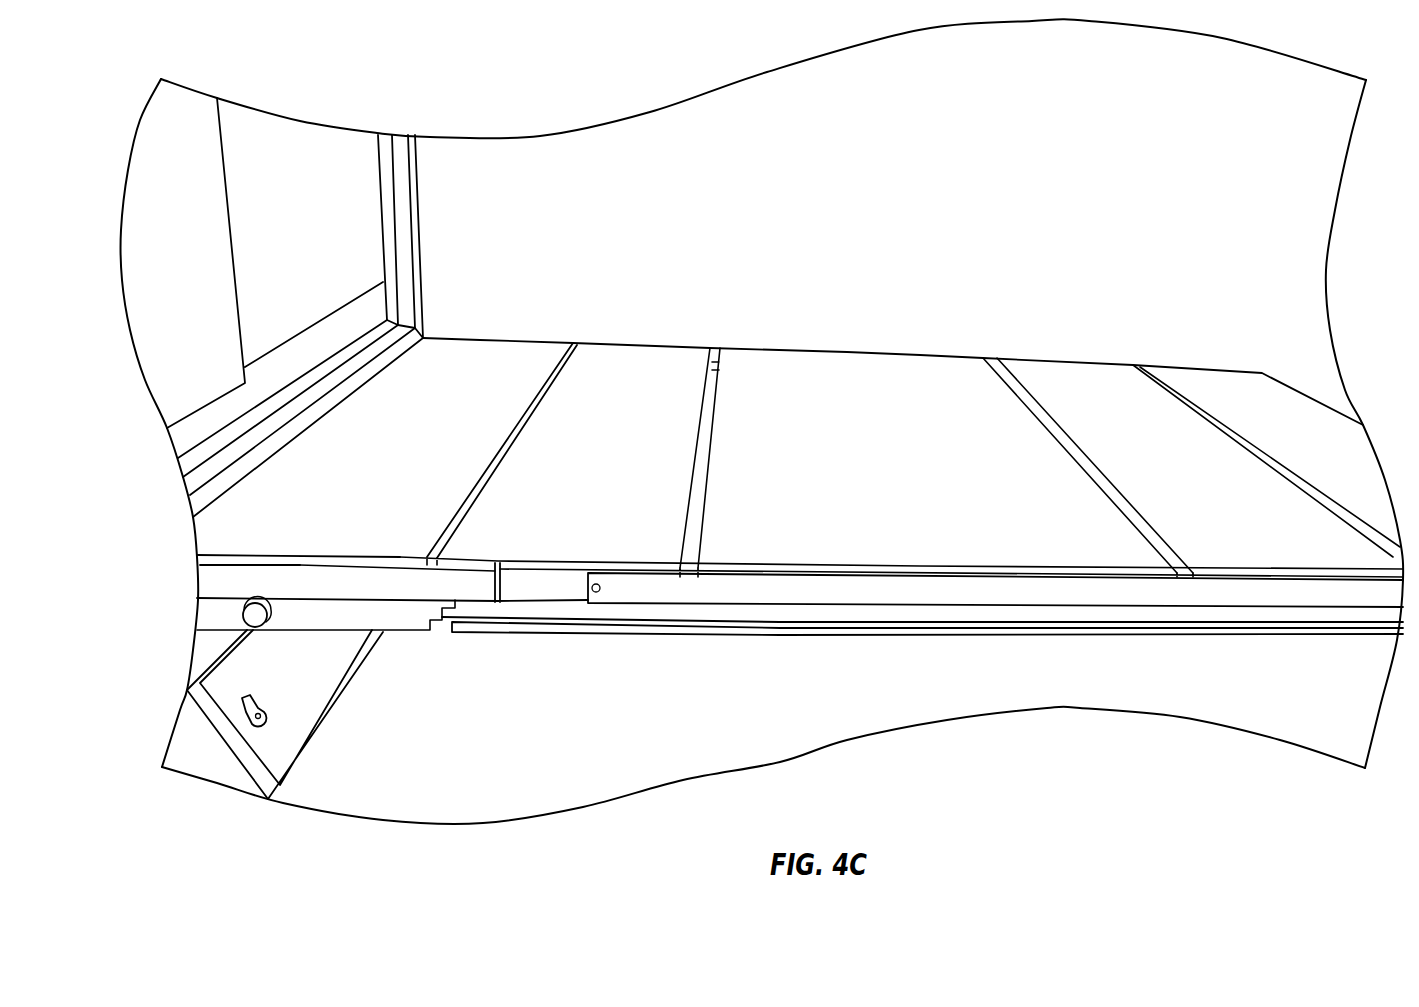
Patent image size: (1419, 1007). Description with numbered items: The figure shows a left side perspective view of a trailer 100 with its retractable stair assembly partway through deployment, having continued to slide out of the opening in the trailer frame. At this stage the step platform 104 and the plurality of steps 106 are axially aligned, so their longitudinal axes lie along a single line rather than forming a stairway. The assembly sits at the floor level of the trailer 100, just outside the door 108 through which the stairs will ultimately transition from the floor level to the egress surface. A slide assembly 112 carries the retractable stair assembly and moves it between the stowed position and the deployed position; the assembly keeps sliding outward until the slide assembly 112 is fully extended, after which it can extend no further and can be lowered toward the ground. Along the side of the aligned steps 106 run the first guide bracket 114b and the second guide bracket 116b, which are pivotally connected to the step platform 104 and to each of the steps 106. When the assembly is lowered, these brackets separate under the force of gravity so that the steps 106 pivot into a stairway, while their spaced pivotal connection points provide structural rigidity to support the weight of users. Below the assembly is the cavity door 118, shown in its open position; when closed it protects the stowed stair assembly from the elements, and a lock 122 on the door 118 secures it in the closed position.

The trailer 100 is at (152, 168).
The step platform 104 is at (482, 353).
The steps 106 is at (765, 363).
The door 108 is at (292, 132).
The slide assembly 112 is at (257, 556).
The first guide bracket 114b is at (737, 580).
The second guide bracket 116b is at (735, 625).
The door 118 is at (337, 658).
The lock 122 is at (247, 697).